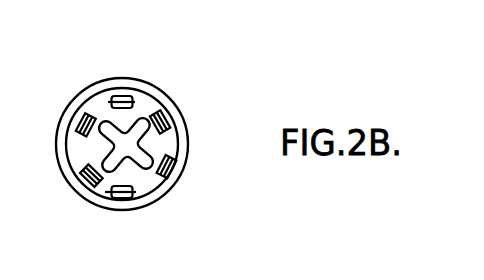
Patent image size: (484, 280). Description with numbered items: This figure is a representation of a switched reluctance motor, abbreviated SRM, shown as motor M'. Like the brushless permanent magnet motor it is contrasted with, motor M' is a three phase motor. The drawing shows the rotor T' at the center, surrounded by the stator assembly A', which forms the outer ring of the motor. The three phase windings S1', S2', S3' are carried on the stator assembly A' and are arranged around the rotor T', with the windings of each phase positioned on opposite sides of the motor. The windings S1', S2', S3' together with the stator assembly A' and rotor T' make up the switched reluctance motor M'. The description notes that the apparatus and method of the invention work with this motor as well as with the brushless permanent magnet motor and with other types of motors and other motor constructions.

The switched reluctance motor SRM is at (139, 129).
The motor M' is at (139, 140).
The stator assembly A' is at (125, 121).
The winding S1' is at (125, 143).
The winding S2' is at (127, 127).
The winding S3' is at (142, 129).
The rotor T' is at (160, 145).